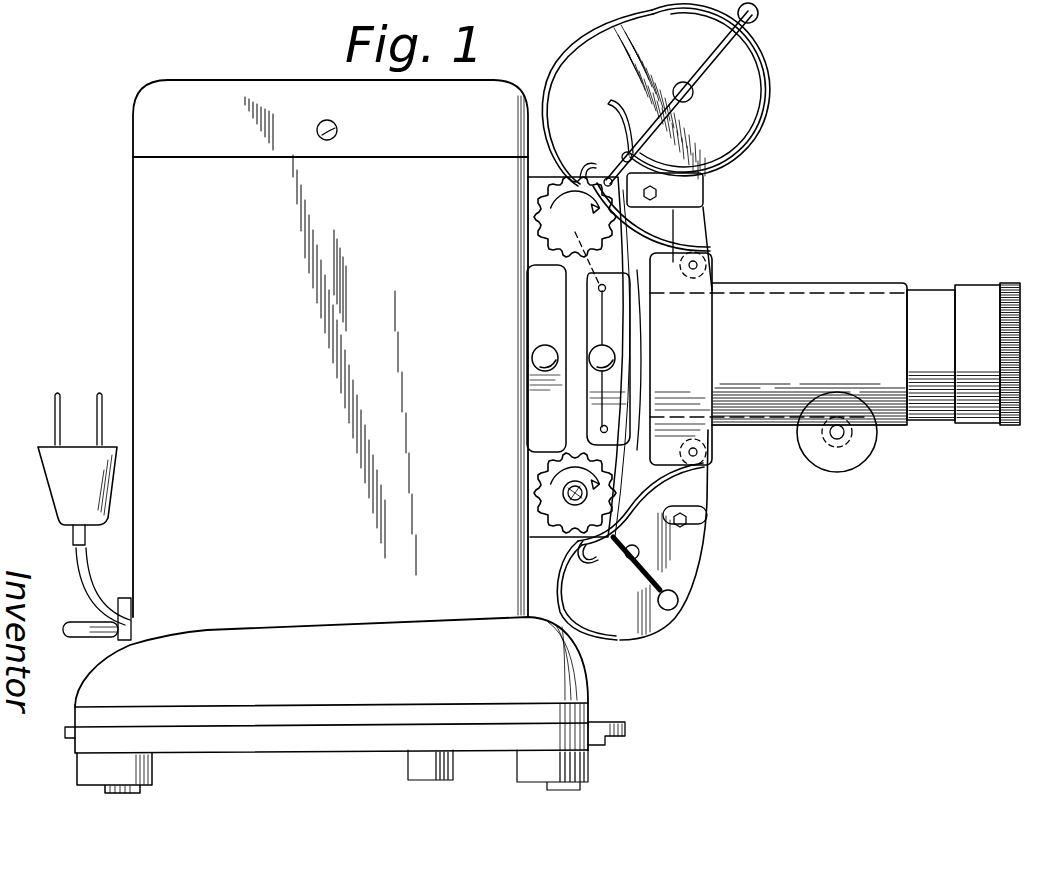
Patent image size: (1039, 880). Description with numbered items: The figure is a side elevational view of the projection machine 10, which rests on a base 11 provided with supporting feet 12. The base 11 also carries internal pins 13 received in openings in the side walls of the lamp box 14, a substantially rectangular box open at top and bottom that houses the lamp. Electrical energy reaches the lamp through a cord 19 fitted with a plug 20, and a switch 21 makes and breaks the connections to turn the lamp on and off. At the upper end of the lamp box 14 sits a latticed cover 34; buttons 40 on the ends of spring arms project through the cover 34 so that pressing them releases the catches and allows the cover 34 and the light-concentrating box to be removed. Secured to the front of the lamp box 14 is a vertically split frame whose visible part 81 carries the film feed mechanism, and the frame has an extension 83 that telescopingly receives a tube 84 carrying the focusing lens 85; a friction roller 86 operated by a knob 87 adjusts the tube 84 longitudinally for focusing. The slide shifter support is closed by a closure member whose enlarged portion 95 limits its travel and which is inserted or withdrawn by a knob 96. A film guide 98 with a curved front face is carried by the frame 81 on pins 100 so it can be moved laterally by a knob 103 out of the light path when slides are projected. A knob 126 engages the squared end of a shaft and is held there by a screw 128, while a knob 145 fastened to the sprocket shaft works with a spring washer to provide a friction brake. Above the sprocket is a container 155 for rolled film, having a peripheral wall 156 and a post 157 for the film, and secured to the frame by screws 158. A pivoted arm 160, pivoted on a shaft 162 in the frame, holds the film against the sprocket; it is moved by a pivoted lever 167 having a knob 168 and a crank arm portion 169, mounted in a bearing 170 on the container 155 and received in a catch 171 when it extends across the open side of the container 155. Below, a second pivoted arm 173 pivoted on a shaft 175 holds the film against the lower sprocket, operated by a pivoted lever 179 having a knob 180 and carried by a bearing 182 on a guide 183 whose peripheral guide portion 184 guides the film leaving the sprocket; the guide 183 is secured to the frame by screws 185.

The projection machine 10 is at (130, 246).
The base 11 is at (563, 676).
The supporting feet 12 is at (148, 770).
The internal pins 13 is at (410, 649).
The lamp box 14 is at (160, 316).
The cord 19 is at (86, 575).
The plug 20 is at (50, 452).
The switch 21 is at (82, 620).
The latticed cover 34 is at (145, 92).
The buttons 40 is at (337, 130).
The frame part 81 is at (530, 250).
The extension 83 is at (740, 428).
The tube 84 is at (922, 302).
The focusing lens 85 is at (980, 296).
The friction roller 86 is at (832, 446).
The knob 87 is at (848, 462).
The enlarged portion 95 is at (538, 291).
The knob 96 is at (532, 358).
The film guide 98 is at (610, 322).
The pins 100 is at (605, 291).
The knob 103 is at (615, 358).
The knob 126 is at (538, 500).
The screw 128 is at (578, 505).
The knob 145 is at (538, 218).
The container 155 is at (752, 105).
The peripheral wall 156 is at (773, 72).
The post 157 is at (694, 102).
The screws 158 is at (658, 193).
The pivoted arm 160 is at (690, 245).
The shaft 162 is at (700, 266).
The pivoted lever 167 is at (698, 74).
The knob 168 is at (760, 20).
The crank arm portion 169 is at (612, 184).
The bearing 170 is at (623, 150).
The catch 171 is at (714, 24).
The second pivoted arm 173 is at (642, 498).
The shaft 175 is at (700, 458).
The pivoted lever 179 is at (655, 592).
The knob 180 is at (680, 604).
The bearing 182 is at (624, 562).
The guide 183 is at (692, 566).
The peripheral guide portion 184 is at (598, 636).
The screws 185 is at (692, 523).